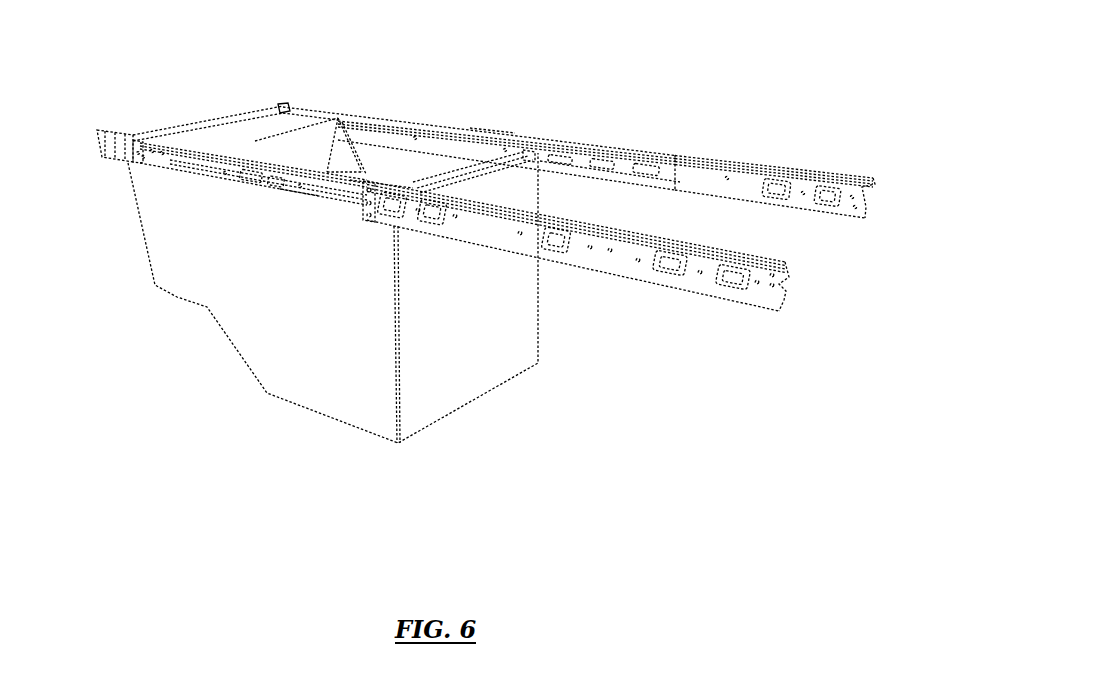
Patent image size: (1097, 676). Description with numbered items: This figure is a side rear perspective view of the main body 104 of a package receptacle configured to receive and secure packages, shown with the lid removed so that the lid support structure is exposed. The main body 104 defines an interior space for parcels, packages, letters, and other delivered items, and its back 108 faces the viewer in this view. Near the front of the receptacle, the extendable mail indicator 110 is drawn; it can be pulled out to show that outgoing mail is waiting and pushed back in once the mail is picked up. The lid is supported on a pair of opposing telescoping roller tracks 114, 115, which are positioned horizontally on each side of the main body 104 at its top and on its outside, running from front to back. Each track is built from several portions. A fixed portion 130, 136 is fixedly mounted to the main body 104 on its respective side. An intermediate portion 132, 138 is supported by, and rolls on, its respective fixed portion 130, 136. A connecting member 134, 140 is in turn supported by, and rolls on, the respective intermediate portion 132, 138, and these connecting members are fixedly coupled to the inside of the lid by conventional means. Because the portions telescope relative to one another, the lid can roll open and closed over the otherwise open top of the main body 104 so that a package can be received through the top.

The main body 104 is at (180, 287).
The back 108 is at (508, 373).
The mail indicator 110 is at (98, 150).
The telescoping roller track 114 is at (300, 207).
The telescoping roller track 115 is at (493, 119).
The fixed portion 130 is at (176, 158).
The intermediate portion 132 is at (270, 192).
The connecting member 134 is at (691, 291).
The fixed portion 136 is at (340, 118).
The intermediate portion 138 is at (446, 121).
The connecting member 140 is at (757, 166).